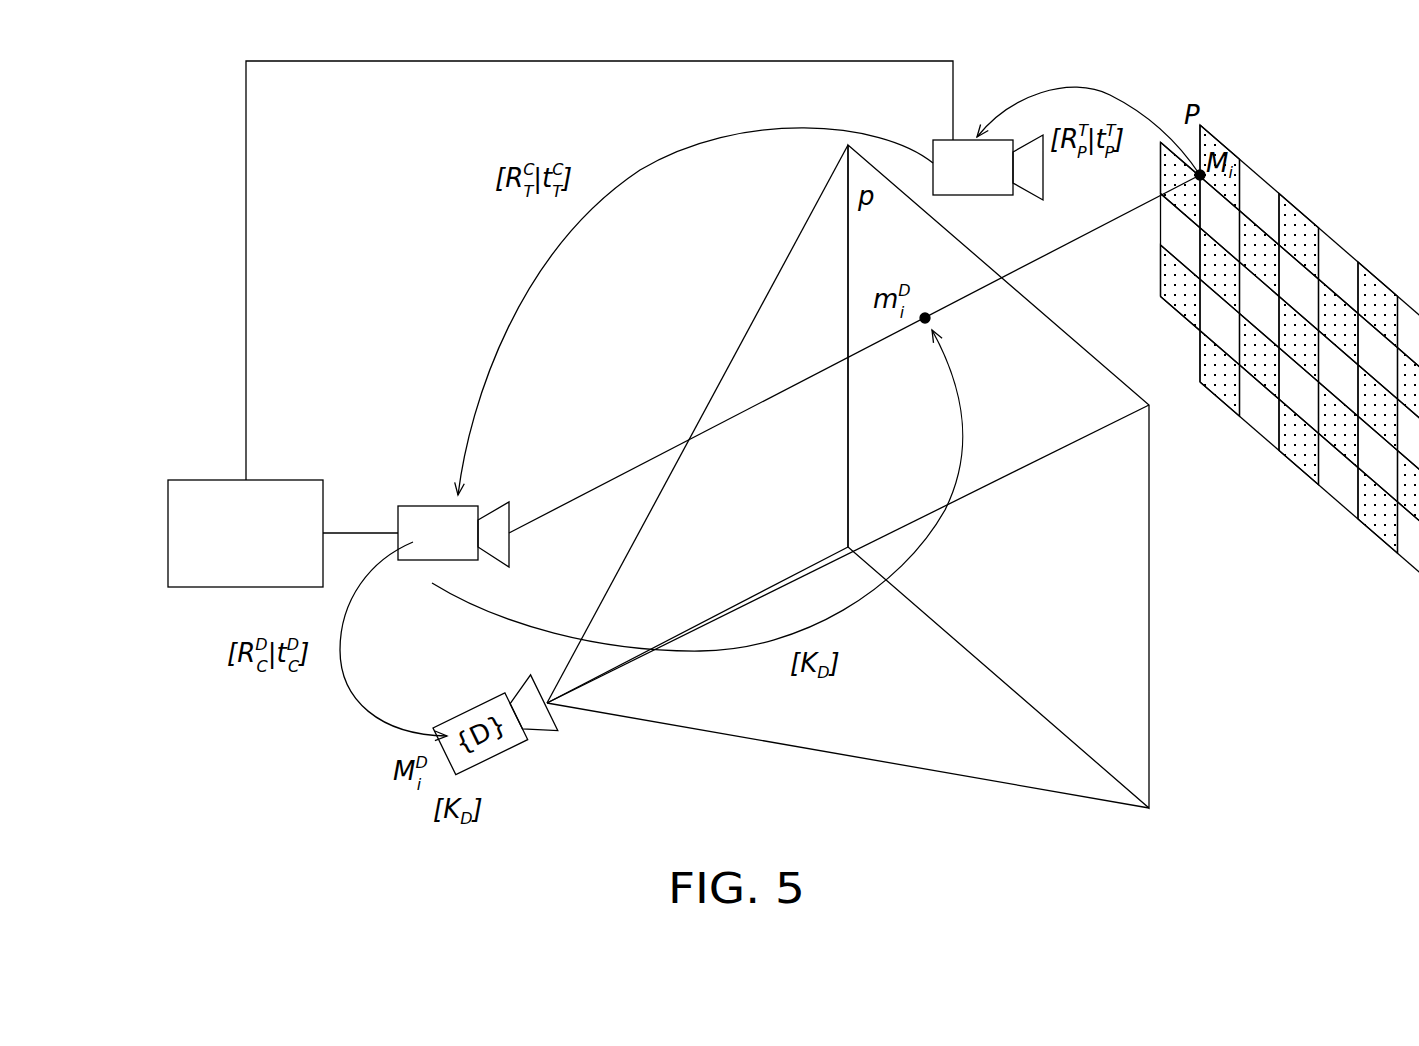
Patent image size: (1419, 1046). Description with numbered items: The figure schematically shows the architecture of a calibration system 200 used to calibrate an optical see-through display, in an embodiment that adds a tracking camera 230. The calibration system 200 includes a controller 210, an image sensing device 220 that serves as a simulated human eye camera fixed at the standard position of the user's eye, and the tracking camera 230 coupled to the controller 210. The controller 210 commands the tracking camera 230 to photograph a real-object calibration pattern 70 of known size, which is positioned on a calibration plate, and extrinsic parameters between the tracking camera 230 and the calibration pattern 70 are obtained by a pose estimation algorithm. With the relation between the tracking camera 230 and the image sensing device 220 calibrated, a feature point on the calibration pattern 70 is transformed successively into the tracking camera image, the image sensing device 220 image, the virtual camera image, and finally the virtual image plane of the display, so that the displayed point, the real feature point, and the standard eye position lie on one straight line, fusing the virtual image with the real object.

The calibration system 200 is at (152, 602).
The controller 210 is at (197, 480).
The image sensing device 220 is at (422, 506).
The tracking camera 230 is at (965, 139).
The calibration pattern of the real object 70 is at (1338, 251).